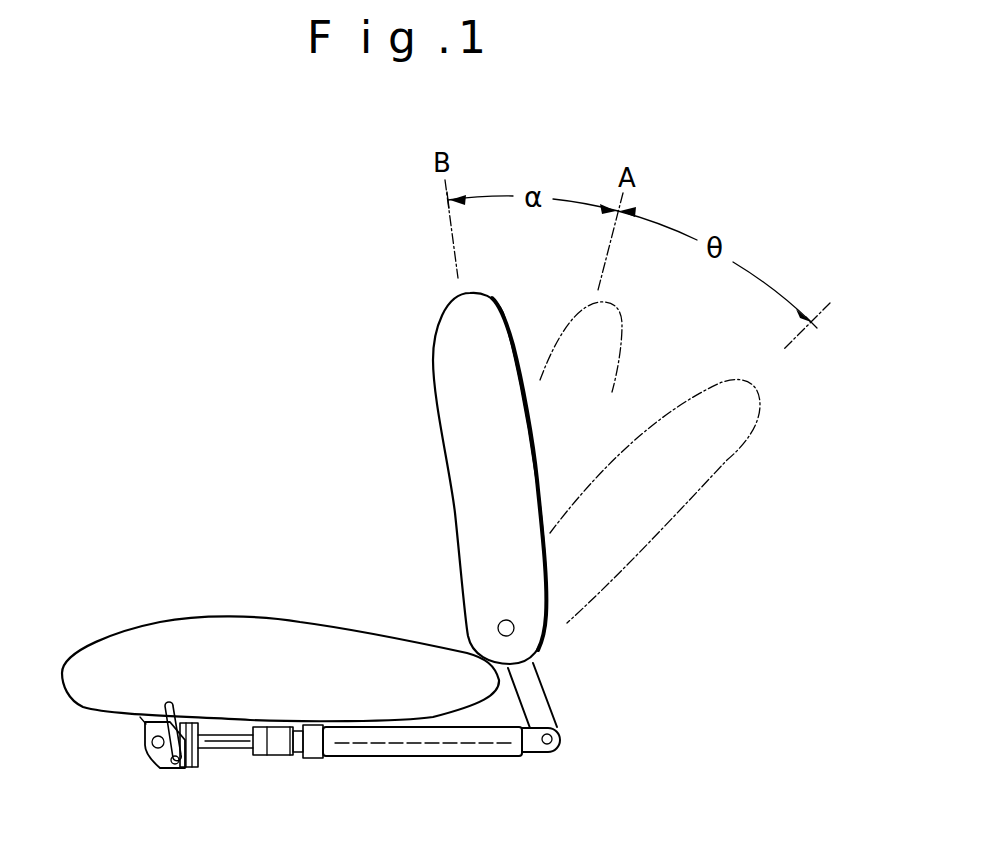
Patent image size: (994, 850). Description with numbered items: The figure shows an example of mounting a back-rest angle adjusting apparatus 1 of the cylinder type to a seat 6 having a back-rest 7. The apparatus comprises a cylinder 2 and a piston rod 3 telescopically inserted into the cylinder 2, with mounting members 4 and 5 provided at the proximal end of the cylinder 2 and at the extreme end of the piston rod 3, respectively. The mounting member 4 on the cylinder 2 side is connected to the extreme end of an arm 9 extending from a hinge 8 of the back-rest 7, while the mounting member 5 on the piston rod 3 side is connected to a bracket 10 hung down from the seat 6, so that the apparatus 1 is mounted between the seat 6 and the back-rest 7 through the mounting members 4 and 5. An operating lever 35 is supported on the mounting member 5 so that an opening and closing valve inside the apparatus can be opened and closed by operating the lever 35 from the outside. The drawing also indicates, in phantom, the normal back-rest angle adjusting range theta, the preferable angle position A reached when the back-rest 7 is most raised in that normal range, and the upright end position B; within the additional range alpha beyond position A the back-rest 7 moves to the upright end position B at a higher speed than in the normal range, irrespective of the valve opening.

The back-rest angle adjusting apparatus 1 is at (360, 773).
The cylinder 2 is at (385, 757).
The piston rod 3 is at (237, 752).
The mounting member 4 is at (537, 755).
The mounting member 5 is at (158, 762).
The seat 6 is at (262, 635).
The back-rest 7 is at (448, 375).
The hinge 8 is at (514, 629).
The arm 9 is at (542, 703).
The bracket 10 is at (145, 725).
The operating lever 35 is at (172, 703).